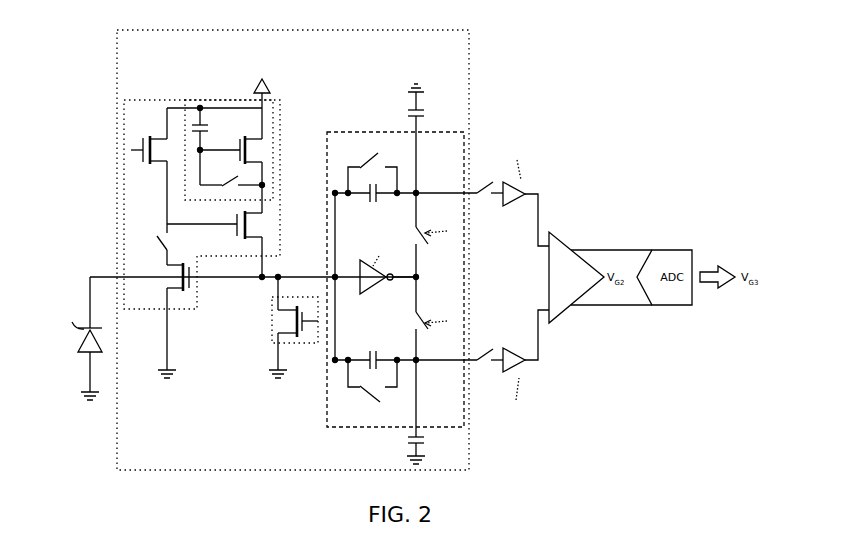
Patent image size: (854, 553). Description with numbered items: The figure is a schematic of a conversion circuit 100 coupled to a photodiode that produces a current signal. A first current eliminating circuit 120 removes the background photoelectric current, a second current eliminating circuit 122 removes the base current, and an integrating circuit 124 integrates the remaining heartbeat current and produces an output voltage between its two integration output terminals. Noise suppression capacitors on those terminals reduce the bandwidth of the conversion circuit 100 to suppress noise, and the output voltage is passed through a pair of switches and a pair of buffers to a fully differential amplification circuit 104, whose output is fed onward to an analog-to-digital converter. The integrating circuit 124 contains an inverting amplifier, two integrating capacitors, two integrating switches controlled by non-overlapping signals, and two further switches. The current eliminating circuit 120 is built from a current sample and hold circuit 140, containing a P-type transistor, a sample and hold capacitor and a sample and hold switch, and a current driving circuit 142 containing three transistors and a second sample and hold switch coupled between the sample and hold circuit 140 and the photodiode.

The conversion circuit 100 is at (470, 62).
The fully differential amplification circuit 104 is at (569, 245).
The current eliminating circuit 120 is at (224, 63).
The current eliminating circuit 122 is at (272, 322).
The integrating circuit 124 is at (351, 131).
The current sample and hold circuit 140 is at (208, 99).
The current driving circuit 142 is at (167, 99).